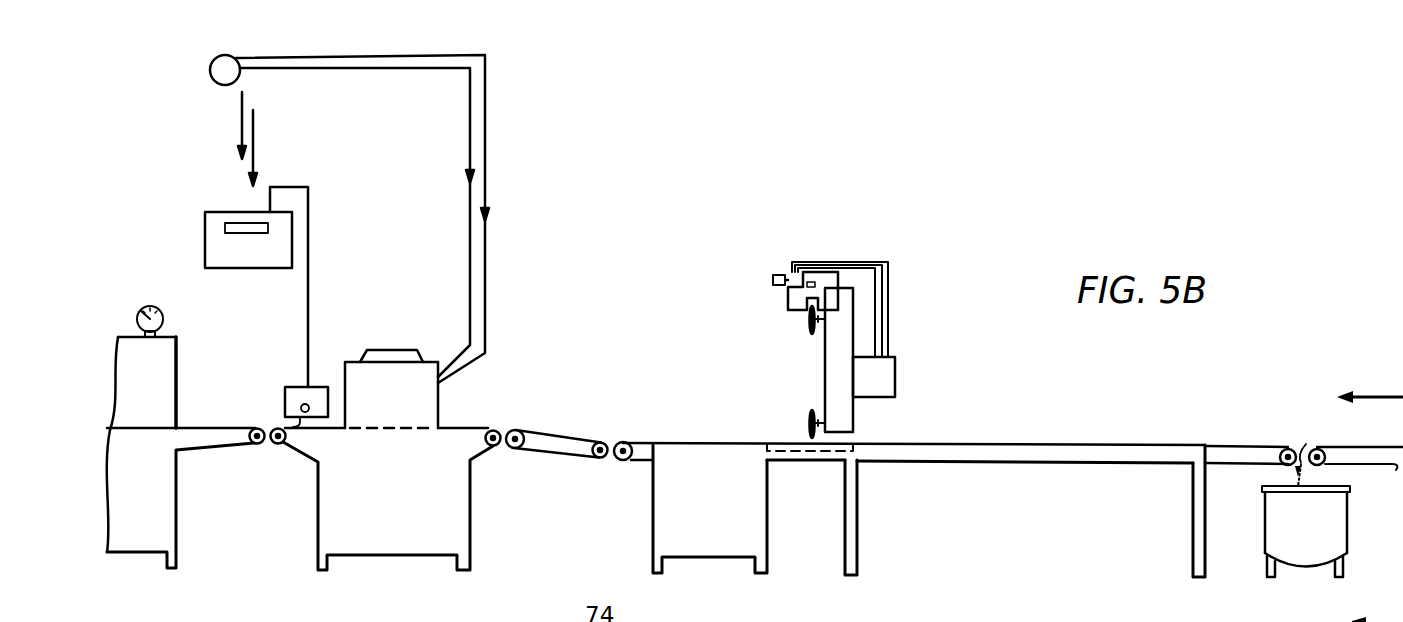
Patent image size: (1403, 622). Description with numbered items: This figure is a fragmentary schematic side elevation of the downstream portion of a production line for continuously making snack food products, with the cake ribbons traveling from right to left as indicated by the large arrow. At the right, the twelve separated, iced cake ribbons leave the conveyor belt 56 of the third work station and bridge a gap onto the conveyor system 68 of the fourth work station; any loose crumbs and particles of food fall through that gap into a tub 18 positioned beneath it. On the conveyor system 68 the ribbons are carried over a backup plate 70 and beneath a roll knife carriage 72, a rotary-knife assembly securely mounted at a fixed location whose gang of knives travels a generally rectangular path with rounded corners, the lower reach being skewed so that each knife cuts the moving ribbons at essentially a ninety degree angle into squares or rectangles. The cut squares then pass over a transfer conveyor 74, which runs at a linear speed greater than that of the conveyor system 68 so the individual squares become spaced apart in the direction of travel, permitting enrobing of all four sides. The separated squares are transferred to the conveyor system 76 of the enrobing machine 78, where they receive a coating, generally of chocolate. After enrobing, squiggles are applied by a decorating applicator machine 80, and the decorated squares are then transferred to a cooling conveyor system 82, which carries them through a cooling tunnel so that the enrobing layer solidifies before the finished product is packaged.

The tub 18 is at (1347, 524).
The conveyor belt 56 is at (1387, 447).
The conveyor system 68 is at (1243, 445).
The backup plate 70 is at (820, 453).
The roll knife carriage 72 is at (776, 334).
The transfer conveyor 74 is at (563, 435).
The conveyor system 76 is at (467, 428).
The enrobing machine 78 is at (412, 333).
The decorating applicator machine 80 is at (318, 387).
The cooling conveyor system 82 is at (235, 428).